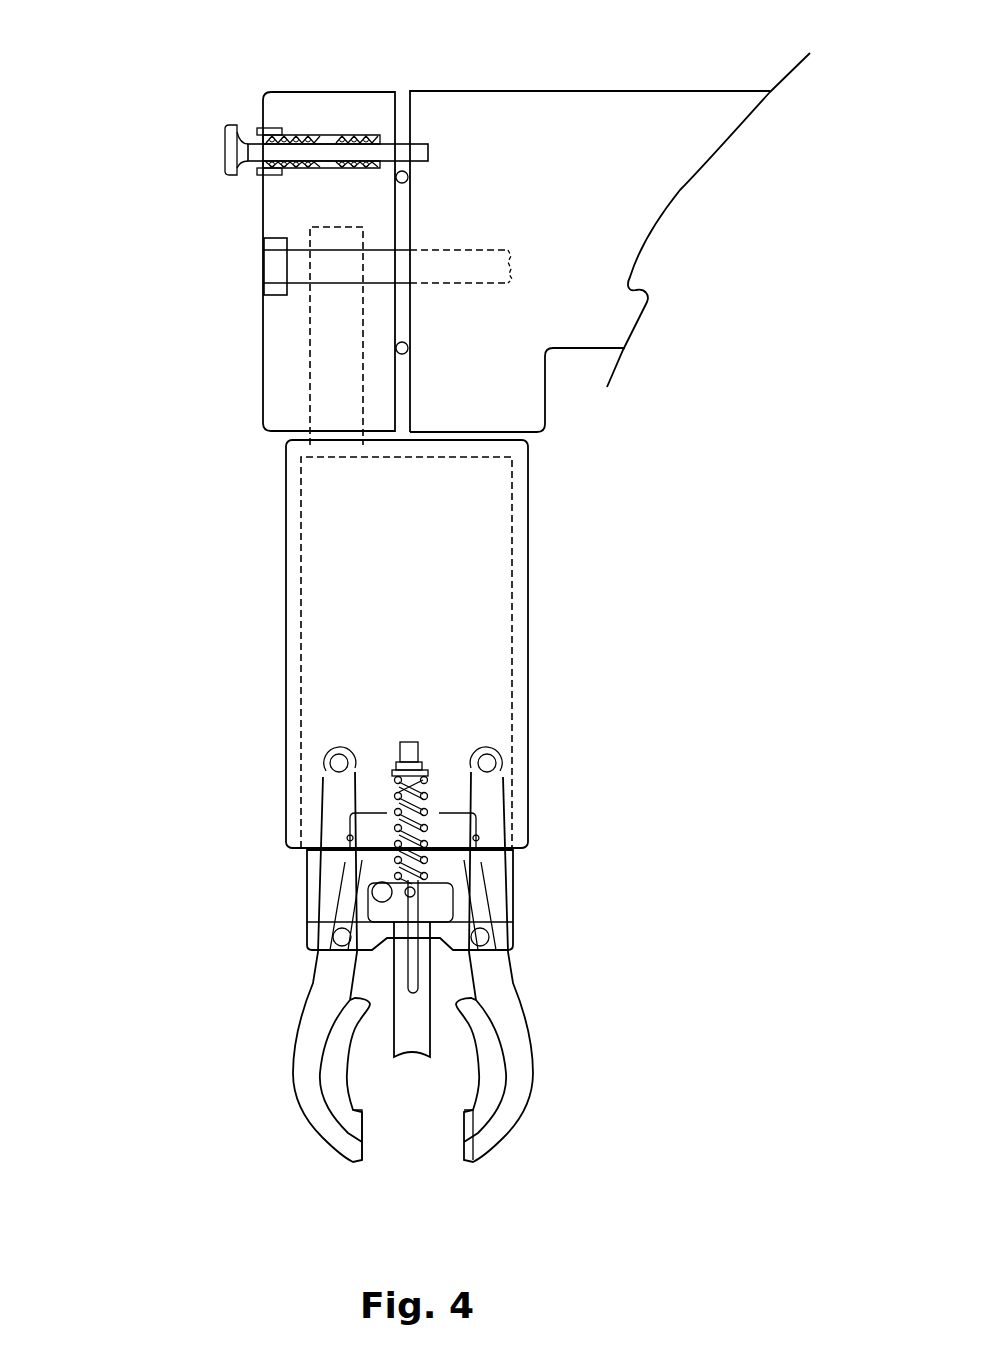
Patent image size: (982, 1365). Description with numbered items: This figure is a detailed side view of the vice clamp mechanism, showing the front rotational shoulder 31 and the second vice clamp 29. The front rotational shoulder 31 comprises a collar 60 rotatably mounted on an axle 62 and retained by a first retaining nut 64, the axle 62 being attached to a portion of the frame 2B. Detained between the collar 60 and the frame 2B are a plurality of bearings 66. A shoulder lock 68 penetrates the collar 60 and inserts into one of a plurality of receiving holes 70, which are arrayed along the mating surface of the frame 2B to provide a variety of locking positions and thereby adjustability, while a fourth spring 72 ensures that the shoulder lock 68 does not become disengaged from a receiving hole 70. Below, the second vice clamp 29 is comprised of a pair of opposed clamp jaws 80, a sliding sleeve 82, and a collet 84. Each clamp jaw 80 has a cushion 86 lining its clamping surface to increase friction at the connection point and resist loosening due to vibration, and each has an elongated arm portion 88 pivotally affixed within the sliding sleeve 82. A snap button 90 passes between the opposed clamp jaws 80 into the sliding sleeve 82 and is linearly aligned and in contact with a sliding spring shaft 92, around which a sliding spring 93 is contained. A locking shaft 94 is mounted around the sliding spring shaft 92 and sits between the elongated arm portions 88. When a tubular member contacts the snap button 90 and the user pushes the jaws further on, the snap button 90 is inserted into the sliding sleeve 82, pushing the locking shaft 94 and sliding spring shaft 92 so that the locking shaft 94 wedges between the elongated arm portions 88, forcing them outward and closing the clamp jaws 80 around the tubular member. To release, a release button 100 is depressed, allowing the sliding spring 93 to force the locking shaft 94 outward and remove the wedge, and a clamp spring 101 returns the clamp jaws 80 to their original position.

The front rotational shoulder 31 is at (170, 83).
The fourth spring 72 is at (298, 132).
The receiving holes 70 is at (420, 138).
The frame 2B is at (632, 93).
The shoulder lock 68 is at (225, 140).
The bearings 66 is at (388, 182).
The first retaining nut 64 is at (268, 287).
The axle 62 is at (343, 287).
The collar 60 is at (270, 435).
The collet 84 is at (283, 595).
The sliding spring shaft 92 is at (425, 742).
The clamp spring 101 is at (330, 753).
The sliding spring 93 is at (426, 797).
The elongated arm portion 88 is at (468, 817).
The release button 100 is at (372, 882).
The locking shaft 94 is at (422, 890).
The sliding sleeve 82 is at (307, 897).
The snap button 90 is at (433, 1037).
The clamp jaws 80 is at (523, 1080).
The cushion 86 is at (358, 1112).
The second vice clamp 29 is at (193, 1135).